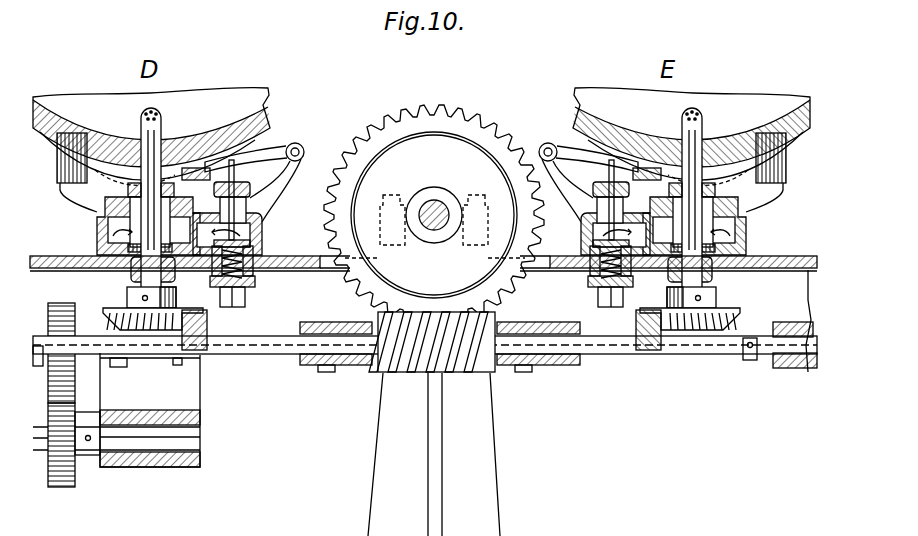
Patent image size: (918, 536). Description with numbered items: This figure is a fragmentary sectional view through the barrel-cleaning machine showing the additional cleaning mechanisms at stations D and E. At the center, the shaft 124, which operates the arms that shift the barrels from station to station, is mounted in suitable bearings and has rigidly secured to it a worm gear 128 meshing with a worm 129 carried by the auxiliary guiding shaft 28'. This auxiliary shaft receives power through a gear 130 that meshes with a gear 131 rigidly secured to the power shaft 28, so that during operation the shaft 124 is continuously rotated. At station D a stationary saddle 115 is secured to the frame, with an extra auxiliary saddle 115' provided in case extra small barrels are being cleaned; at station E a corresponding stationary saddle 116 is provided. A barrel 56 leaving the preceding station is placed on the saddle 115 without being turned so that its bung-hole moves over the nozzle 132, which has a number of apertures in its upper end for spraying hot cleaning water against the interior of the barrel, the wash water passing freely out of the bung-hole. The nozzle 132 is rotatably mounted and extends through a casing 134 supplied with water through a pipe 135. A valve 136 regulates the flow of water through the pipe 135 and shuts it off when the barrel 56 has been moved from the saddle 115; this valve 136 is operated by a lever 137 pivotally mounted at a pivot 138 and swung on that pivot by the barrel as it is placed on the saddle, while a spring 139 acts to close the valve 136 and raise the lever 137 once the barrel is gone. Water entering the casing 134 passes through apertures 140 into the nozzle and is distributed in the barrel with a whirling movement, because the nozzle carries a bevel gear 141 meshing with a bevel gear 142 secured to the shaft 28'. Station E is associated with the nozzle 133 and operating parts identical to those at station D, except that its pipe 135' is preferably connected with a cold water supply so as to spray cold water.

The power shaft 28 is at (116, 465).
The auxiliary guiding shaft 28' is at (423, 361).
The barrel 56 is at (262, 108).
The stationary saddle 115 is at (69, 176).
The auxiliary saddle 115' is at (421, 166).
The stationary saddle 116 is at (760, 195).
The shaft 124 is at (434, 202).
The worm gear 128 is at (494, 126).
The worm 129 is at (446, 366).
The gear 130 is at (63, 303).
The gear 131 is at (68, 478).
The nozzle 132 is at (158, 116).
The nozzle 133 is at (705, 127).
The casing 134 is at (97, 239).
The pipe 135 is at (250, 234).
The pipe 135' is at (588, 236).
The valve 136 is at (263, 252).
The lever 137 is at (292, 145).
The pivot 138 is at (303, 154).
The spring 139 is at (218, 282).
The apertures 140 is at (150, 231).
The bevel gear 141 is at (135, 356).
The bevel gear 142 is at (206, 356).